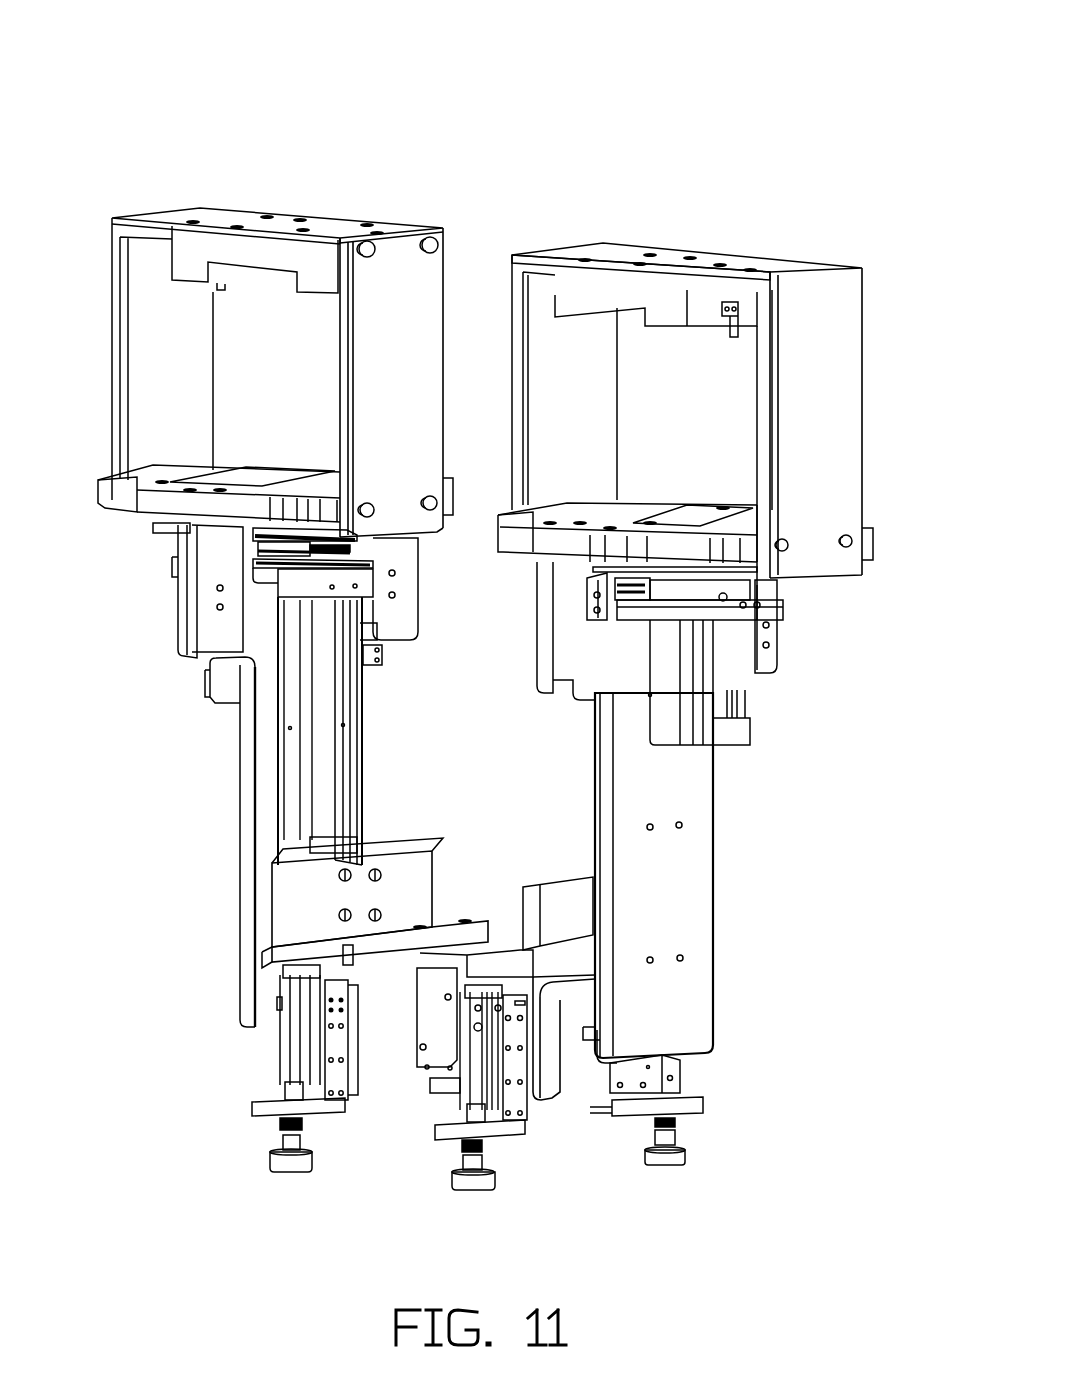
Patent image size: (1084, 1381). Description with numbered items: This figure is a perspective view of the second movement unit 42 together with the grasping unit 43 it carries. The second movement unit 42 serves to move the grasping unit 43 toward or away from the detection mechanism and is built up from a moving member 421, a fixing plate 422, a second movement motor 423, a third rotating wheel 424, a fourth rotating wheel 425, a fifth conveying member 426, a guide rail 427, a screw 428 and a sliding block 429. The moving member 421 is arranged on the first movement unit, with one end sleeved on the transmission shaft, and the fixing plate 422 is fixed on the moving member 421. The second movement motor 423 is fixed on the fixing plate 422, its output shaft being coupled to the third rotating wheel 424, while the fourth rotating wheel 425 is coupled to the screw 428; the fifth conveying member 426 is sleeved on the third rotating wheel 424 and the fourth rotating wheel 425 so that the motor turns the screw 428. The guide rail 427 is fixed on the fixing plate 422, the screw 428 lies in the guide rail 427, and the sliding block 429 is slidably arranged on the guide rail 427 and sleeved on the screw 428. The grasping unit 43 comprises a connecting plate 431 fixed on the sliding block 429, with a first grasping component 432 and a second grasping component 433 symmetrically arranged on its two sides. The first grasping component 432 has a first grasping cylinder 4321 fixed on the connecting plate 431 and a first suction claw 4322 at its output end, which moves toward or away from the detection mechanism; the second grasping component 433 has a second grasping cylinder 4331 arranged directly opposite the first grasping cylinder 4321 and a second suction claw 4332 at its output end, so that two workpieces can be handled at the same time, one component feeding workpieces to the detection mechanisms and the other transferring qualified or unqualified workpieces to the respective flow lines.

The second movement unit 42 is at (43, 143).
The moving member 421 is at (302, 256).
The fixing plate 422 is at (218, 570).
The second movement motor 423 is at (228, 685).
The third rotating wheel 424 is at (280, 538).
The fourth rotating wheel 425 is at (263, 522).
The fifth conveying member 426 is at (305, 553).
The guide rail 427 is at (352, 708).
The screw 428 is at (327, 803).
The sliding block 429 is at (330, 888).
The grasping unit 43 is at (898, 1043).
The connecting plate 431 is at (536, 1012).
The first grasping component 432 is at (832, 1167).
The first grasping cylinder 4321 is at (490, 1080).
The first suction claw 4322 is at (473, 1177).
The second grasping component 433 is at (832, 1093).
The second grasping cylinder 4331 is at (668, 1084).
The second suction claw 4332 is at (675, 1156).